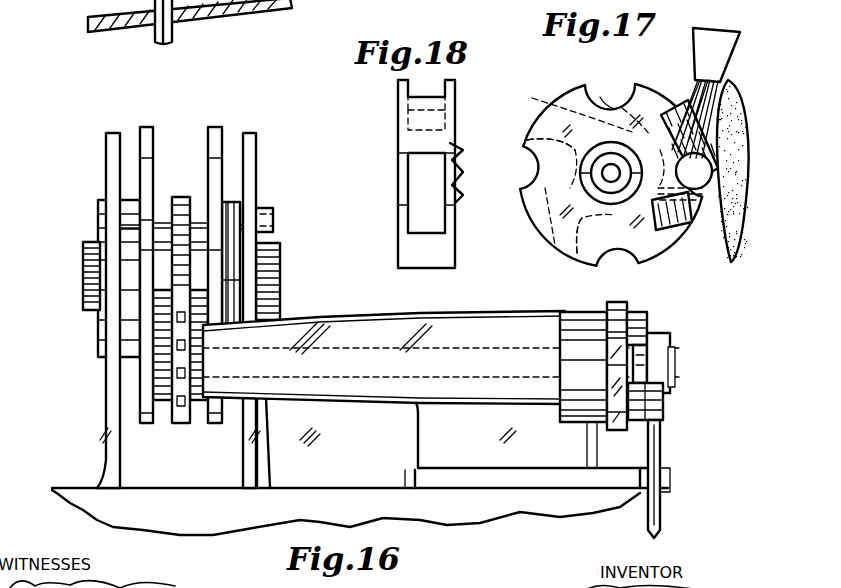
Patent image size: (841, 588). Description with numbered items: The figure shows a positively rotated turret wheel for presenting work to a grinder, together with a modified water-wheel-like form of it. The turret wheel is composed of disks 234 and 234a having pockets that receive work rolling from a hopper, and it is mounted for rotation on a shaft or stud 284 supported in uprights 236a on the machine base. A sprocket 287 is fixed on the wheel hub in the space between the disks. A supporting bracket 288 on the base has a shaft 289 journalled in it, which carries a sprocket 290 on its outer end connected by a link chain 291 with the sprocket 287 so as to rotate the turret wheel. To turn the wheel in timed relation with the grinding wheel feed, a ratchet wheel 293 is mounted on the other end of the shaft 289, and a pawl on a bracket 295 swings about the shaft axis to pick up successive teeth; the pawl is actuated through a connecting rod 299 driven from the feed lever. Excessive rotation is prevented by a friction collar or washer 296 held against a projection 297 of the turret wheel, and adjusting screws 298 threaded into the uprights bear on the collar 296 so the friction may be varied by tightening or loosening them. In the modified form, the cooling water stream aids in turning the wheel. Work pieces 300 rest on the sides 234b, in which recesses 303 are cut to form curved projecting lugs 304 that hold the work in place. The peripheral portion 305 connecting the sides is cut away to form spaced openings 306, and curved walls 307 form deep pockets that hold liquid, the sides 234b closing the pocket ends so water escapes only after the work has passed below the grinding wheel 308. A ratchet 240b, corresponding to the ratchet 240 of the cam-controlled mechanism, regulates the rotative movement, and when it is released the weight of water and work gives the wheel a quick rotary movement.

In FIG. 16, the turret wheel disk 234 is at (627, 306).
In FIG. 16, the turret wheel disk 234a is at (216, 127).
In FIG. 17, the wheel side 234b is at (655, 238).
In FIG. 18, the wheel side 234b is at (398, 95).
In FIG. 16, the upright 236a is at (107, 133).
In FIG. 17, the ratchet 240 is at (535, 180).
In FIG. 18, the ratchet 240b is at (460, 190).
In FIG. 16, the shaft or stud 284 is at (85, 272).
In FIG. 16, the sprocket 287 is at (195, 218).
In FIG. 16, the supporting bracket 288 is at (312, 395).
In FIG. 16, the shaft 289 is at (345, 352).
In FIG. 16, the sprocket 290 is at (192, 402).
In FIG. 16, the link chain 291 is at (172, 420).
In FIG. 16, the ratchet wheel 293 is at (617, 425).
In FIG. 16, the bracket 295 is at (647, 320).
In FIG. 16, the friction collar or washer 296 is at (236, 200).
In FIG. 16, the projection 297 is at (228, 200).
In FIG. 16, the adjusting screw 298 is at (274, 220).
In FIG. 16, the connecting rod 299 is at (660, 448).
In FIG. 17, the work piece 300 is at (699, 190).
In FIG. 17, the recess 303 is at (617, 108).
In FIG. 17, the projecting lug 304 is at (635, 82).
In FIG. 17, the peripheral portion 305 is at (553, 248).
In FIG. 18, the peripheral portion 305 is at (428, 268).
In FIG. 17, the opening 306 is at (545, 205).
In FIG. 18, the opening 306 is at (430, 217).
In FIG. 17, the curved wall 307 is at (540, 140).
In FIG. 17, the grinding wheel 308 is at (737, 258).